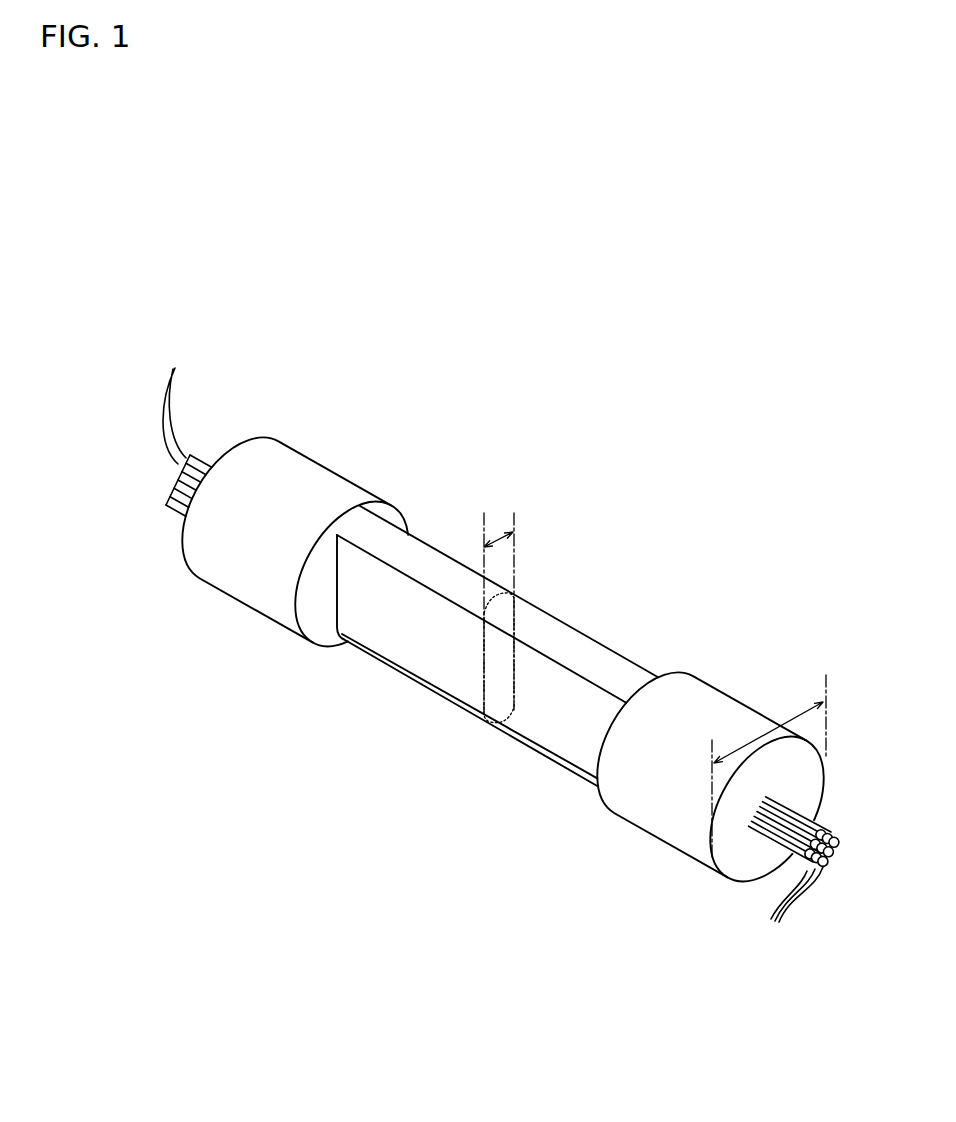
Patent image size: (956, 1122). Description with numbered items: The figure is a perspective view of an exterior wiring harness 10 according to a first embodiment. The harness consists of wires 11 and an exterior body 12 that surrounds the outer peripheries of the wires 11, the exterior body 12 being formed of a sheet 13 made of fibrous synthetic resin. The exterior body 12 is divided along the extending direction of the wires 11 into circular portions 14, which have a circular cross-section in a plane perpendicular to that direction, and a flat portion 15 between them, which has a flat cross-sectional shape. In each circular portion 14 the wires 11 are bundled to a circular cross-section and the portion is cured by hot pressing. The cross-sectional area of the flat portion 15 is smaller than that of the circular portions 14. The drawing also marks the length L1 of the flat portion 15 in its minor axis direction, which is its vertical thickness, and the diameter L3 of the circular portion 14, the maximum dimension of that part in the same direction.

The exterior wiring harness 10 is at (711, 658).
The wires 11 is at (499, 644).
The exterior body 12 is at (443, 577).
The sheet 13 is at (346, 493).
The circular portion 14 is at (293, 463).
The flat portion 15 is at (553, 637).
The length of the flat portion in the minor axis direction L1 is at (495, 532).
The diameter of the circular portion L3 is at (793, 713).